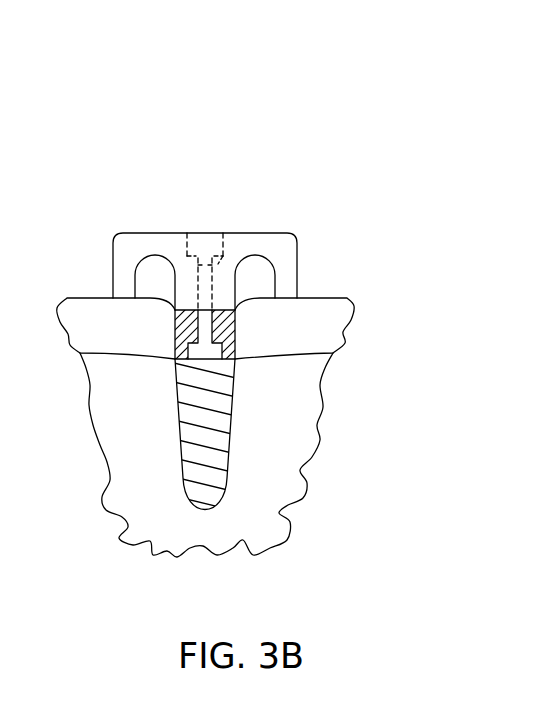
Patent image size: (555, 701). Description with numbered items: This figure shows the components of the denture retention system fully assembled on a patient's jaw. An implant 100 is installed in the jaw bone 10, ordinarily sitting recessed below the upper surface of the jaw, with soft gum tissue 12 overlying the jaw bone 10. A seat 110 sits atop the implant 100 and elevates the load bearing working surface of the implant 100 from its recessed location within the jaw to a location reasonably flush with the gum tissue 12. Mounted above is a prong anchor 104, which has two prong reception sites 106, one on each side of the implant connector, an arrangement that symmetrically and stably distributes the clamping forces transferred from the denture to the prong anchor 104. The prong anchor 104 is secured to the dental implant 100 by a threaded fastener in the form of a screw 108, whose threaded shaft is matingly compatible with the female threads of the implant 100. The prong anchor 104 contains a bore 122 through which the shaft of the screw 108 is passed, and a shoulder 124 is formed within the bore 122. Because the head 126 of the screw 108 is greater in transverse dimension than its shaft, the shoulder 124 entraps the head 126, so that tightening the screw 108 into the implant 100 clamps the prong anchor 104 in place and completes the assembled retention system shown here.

The jaw bone 10 is at (128, 472).
The gum tissue 12 is at (92, 323).
The implant 100 is at (258, 423).
The prong anchor 104 is at (289, 214).
The prong reception sites 106 is at (153, 281).
The screw 108 is at (203, 234).
The seat 110 is at (220, 328).
The bore 122 is at (230, 176).
The shoulder 124 is at (191, 259).
The head 126 is at (212, 248).